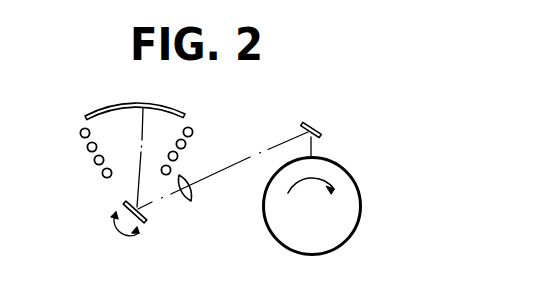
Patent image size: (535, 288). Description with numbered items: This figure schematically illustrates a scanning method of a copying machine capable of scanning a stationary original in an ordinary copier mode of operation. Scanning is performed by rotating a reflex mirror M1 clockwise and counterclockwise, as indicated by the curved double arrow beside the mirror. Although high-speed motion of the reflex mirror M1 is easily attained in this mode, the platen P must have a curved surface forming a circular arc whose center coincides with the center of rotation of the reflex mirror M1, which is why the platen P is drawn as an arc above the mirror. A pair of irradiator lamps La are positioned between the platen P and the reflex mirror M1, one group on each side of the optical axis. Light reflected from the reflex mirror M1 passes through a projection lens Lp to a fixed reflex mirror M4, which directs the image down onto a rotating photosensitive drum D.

The platen P is at (176, 113).
The irradiator lamps La is at (95, 154).
The reflex mirror M1 is at (145, 221).
The projection lens Lp is at (191, 197).
The fixed reflex mirror M4 is at (322, 133).
The photosensitive drum D is at (362, 210).